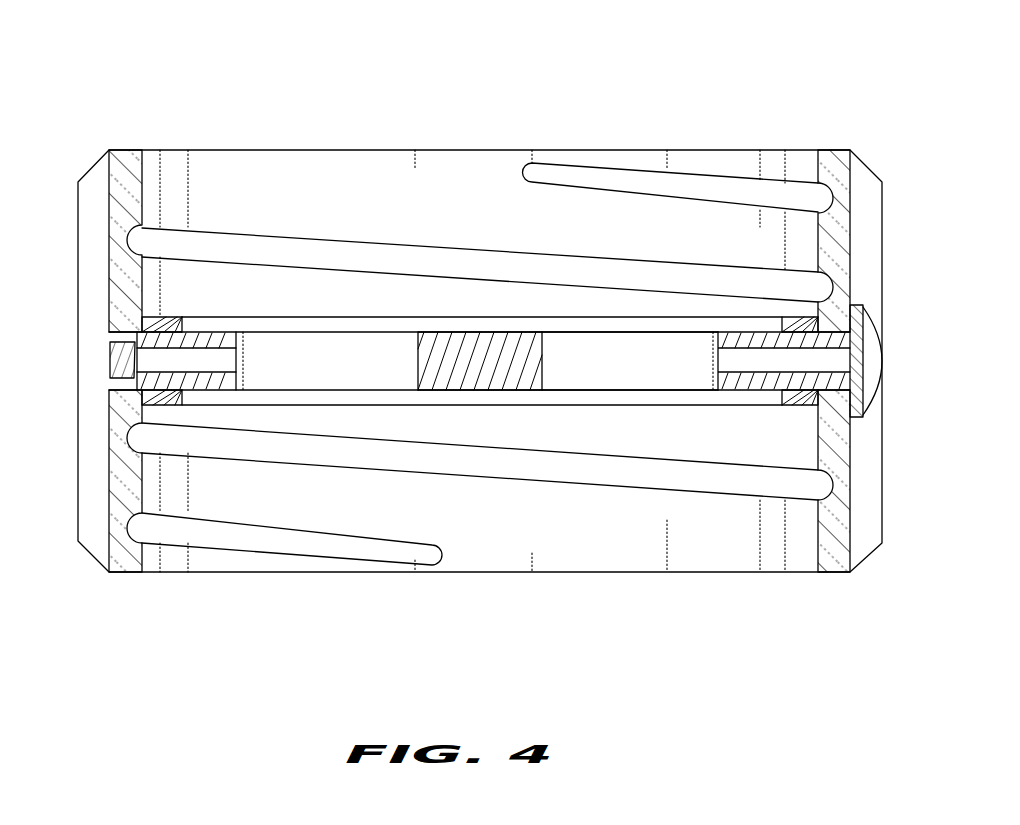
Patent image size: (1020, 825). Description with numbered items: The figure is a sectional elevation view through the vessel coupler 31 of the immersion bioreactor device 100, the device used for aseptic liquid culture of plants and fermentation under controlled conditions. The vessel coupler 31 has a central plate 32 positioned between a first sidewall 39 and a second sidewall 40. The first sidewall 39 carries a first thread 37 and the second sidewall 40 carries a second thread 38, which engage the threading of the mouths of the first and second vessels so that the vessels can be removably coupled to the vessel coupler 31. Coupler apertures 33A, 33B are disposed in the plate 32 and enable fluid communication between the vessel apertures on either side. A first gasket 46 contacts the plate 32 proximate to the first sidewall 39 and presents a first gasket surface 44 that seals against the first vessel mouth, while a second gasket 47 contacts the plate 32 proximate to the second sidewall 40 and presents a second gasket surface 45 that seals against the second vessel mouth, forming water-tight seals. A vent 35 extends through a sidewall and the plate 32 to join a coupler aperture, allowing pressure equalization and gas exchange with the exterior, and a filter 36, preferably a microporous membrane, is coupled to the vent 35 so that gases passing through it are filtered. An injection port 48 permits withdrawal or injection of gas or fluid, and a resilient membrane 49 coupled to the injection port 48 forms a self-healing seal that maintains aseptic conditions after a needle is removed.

The immersion bioreactor device 100 is at (361, 112).
The vessel coupler 31 is at (109, 150).
The plate 32 is at (478, 372).
The coupler aperture 33A is at (318, 338).
The coupler aperture 33B is at (590, 378).
The vent 35 is at (720, 362).
The filter 36 is at (862, 362).
The first thread 37 is at (293, 243).
The second thread 38 is at (412, 553).
The first sidewall 39 is at (830, 210).
The second sidewall 40 is at (130, 525).
The first gasket surface 44 is at (162, 320).
The second gasket surface 45 is at (790, 407).
The first gasket 46 is at (460, 325).
The second gasket 47 is at (420, 398).
The injection port 48 is at (213, 360).
The resilient membrane 49 is at (112, 352).